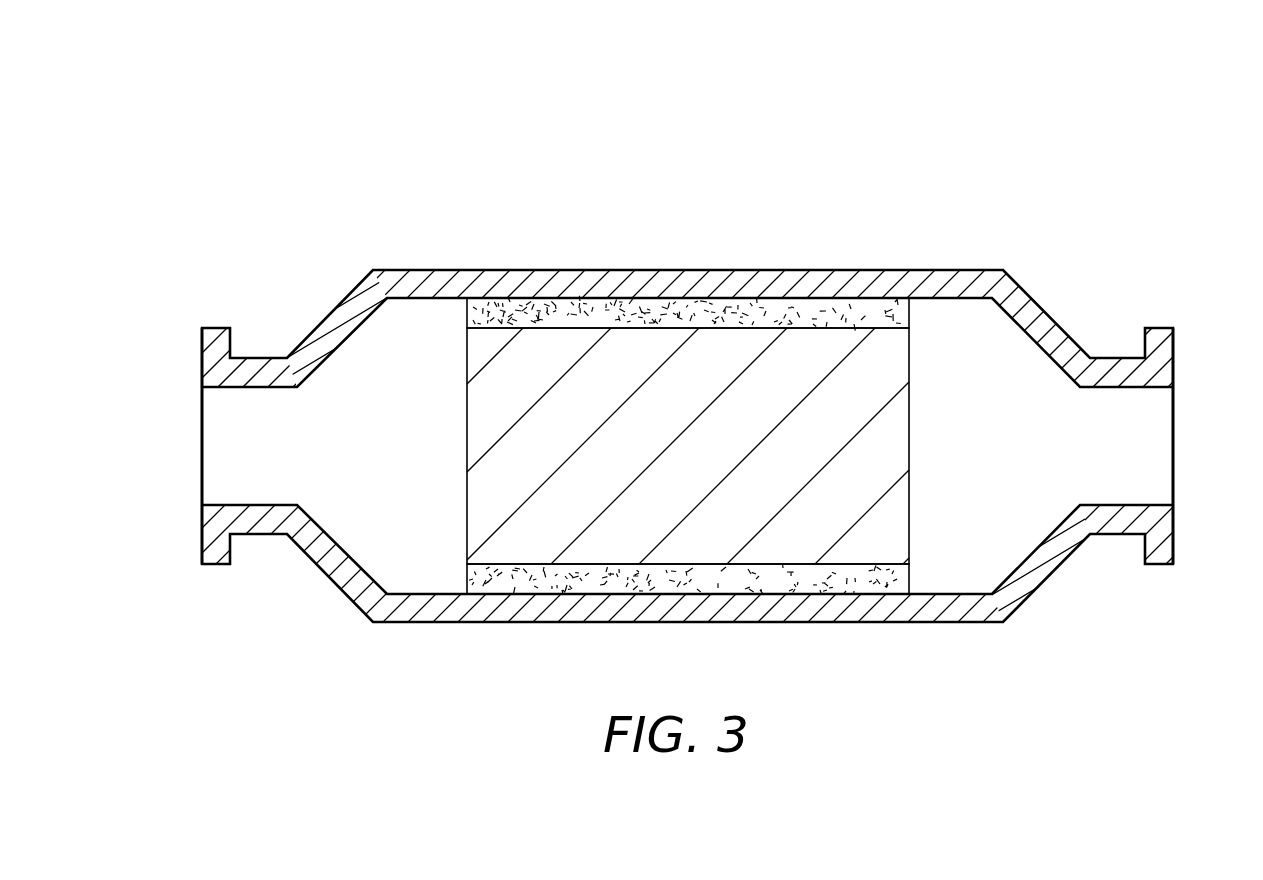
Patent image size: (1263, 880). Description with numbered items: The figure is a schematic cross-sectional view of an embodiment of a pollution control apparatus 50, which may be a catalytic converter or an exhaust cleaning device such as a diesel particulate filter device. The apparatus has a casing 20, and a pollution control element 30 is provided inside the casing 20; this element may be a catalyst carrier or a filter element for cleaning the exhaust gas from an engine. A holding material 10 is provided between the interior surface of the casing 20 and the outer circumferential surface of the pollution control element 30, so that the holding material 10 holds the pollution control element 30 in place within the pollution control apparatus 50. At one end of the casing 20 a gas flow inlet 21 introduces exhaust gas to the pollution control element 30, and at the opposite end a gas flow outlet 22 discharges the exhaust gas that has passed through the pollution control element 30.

The holding material 10 is at (706, 313).
The casing 20 is at (958, 605).
The gas flow inlet 21 is at (202, 443).
The gas flow outlet 22 is at (1173, 445).
The pollution control element 30 is at (882, 445).
The pollution control apparatus 50 is at (1045, 128).